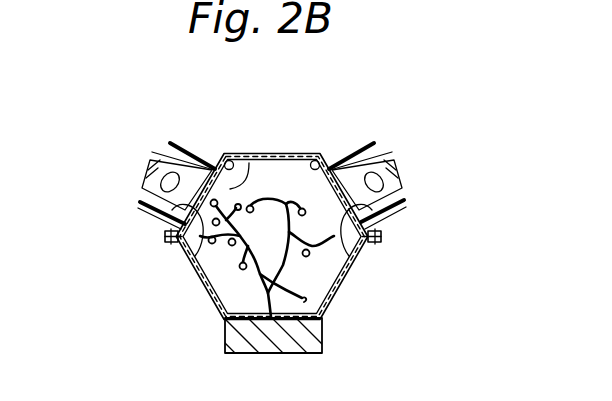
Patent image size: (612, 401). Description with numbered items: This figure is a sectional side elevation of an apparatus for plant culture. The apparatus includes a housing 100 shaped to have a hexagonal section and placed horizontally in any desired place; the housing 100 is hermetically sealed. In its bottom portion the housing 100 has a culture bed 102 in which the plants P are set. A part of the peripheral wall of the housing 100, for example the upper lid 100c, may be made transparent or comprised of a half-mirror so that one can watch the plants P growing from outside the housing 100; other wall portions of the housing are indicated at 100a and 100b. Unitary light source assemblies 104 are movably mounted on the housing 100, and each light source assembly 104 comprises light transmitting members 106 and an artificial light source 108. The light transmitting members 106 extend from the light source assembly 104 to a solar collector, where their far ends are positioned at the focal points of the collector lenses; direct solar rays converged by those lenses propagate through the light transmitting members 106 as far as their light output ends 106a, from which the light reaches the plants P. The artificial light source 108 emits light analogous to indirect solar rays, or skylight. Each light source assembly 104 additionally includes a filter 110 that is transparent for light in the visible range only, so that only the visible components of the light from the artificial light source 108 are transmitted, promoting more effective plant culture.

The housing 100 is at (199, 289).
The frame inner surface 100a is at (251, 155).
The frame side panel 100b is at (328, 172).
The upper lid 100c is at (297, 155).
The culture bed 102 is at (287, 355).
The light source assembly 104 is at (138, 216).
The light transmitting members 106 is at (170, 143).
The light output ends 106a is at (225, 154).
The artificial light source 108 is at (161, 158).
The filter 110 is at (162, 224).
The plants P is at (267, 258).